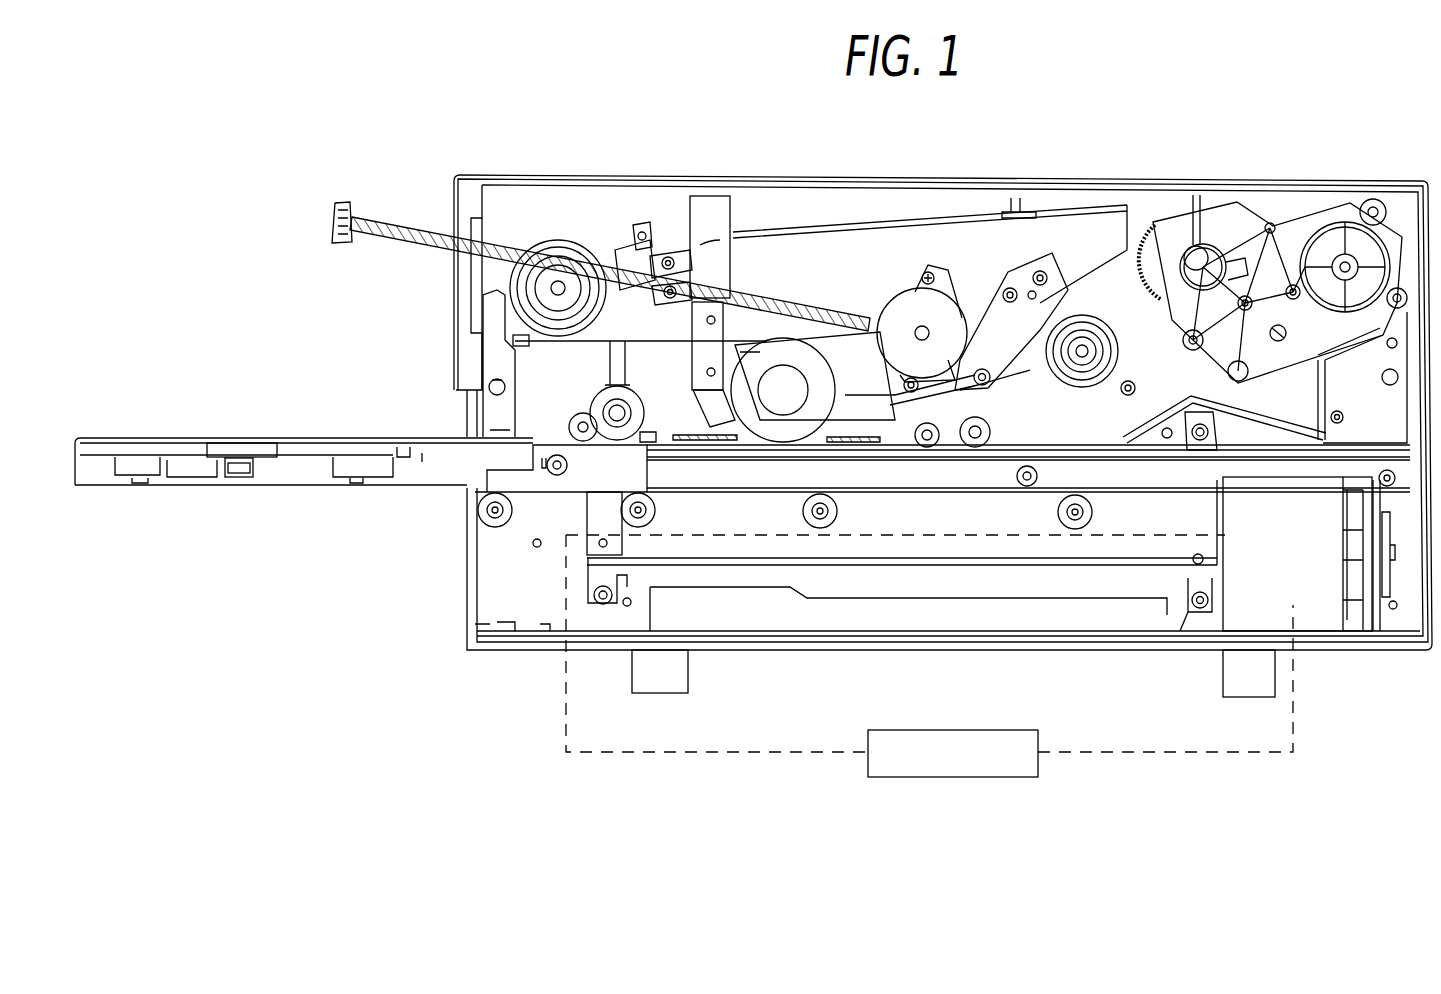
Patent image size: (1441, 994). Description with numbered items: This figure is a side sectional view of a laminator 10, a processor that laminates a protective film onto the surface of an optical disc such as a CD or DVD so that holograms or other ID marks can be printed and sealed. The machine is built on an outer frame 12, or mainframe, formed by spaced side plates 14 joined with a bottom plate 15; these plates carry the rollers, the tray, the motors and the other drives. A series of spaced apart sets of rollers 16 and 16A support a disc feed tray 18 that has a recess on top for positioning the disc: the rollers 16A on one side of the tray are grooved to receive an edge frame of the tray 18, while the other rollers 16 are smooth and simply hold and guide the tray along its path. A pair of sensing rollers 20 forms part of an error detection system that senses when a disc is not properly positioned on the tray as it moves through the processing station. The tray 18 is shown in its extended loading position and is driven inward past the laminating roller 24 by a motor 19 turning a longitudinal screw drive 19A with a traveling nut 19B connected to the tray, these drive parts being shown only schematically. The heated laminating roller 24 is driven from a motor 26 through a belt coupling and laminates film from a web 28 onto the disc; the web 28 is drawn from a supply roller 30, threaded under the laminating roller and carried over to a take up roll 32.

The laminator 10 is at (874, 173).
The outer frame 12 is at (758, 210).
The side plates 14 is at (574, 205).
The bottom plate 15 is at (905, 637).
The rollers 16 is at (568, 424).
The rollers 16A is at (1060, 507).
The disc feed tray 18 is at (297, 477).
The motor 19 is at (1247, 612).
The screw drive 19A is at (955, 777).
The traveling nut 19B is at (605, 532).
The sensing rollers 20 is at (620, 435).
The laminating roller 24 is at (775, 347).
The motor 26 is at (902, 310).
The web 28 is at (610, 340).
The supply roller 30 is at (1120, 340).
The take up roll 32 is at (530, 285).